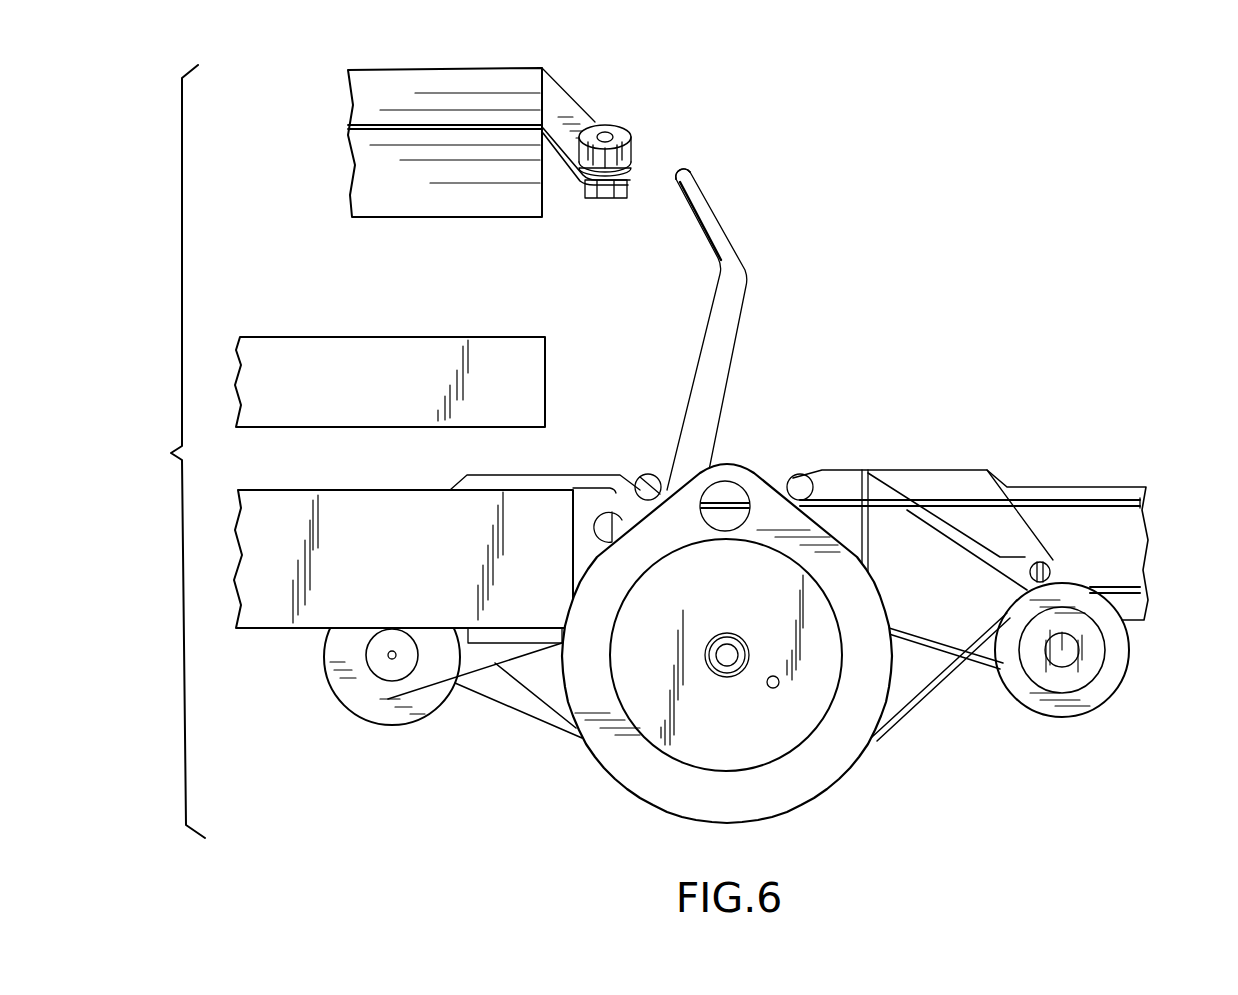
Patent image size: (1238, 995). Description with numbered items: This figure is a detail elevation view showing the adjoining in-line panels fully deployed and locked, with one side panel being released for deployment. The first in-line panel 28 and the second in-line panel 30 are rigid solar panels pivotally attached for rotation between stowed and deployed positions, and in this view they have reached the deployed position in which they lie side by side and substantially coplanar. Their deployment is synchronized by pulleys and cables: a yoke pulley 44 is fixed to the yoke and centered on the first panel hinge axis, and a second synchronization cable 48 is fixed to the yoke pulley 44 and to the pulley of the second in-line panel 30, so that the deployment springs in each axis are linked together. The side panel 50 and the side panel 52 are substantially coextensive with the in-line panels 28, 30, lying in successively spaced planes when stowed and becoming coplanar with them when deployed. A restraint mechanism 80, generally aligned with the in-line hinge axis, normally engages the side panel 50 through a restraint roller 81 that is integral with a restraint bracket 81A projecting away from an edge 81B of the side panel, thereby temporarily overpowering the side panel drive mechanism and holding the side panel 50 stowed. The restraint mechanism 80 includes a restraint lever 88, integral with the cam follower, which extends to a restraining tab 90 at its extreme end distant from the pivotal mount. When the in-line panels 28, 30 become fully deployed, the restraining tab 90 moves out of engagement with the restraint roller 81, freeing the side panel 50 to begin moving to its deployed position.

The first in-line panel 28 is at (1133, 540).
The second in-line panel 30 is at (355, 577).
The yoke pulley 44 is at (817, 770).
The second synchronization cable 48 is at (921, 690).
The side panel 50 is at (443, 82).
The side panel 52 is at (355, 389).
The restraint mechanism 80 is at (772, 268).
The restraint roller 81 is at (620, 135).
The restraint bracket 81A is at (563, 113).
The edge of the side panel 81B is at (543, 193).
The restraint lever 88 is at (722, 354).
The restraining tab 90 is at (708, 221).